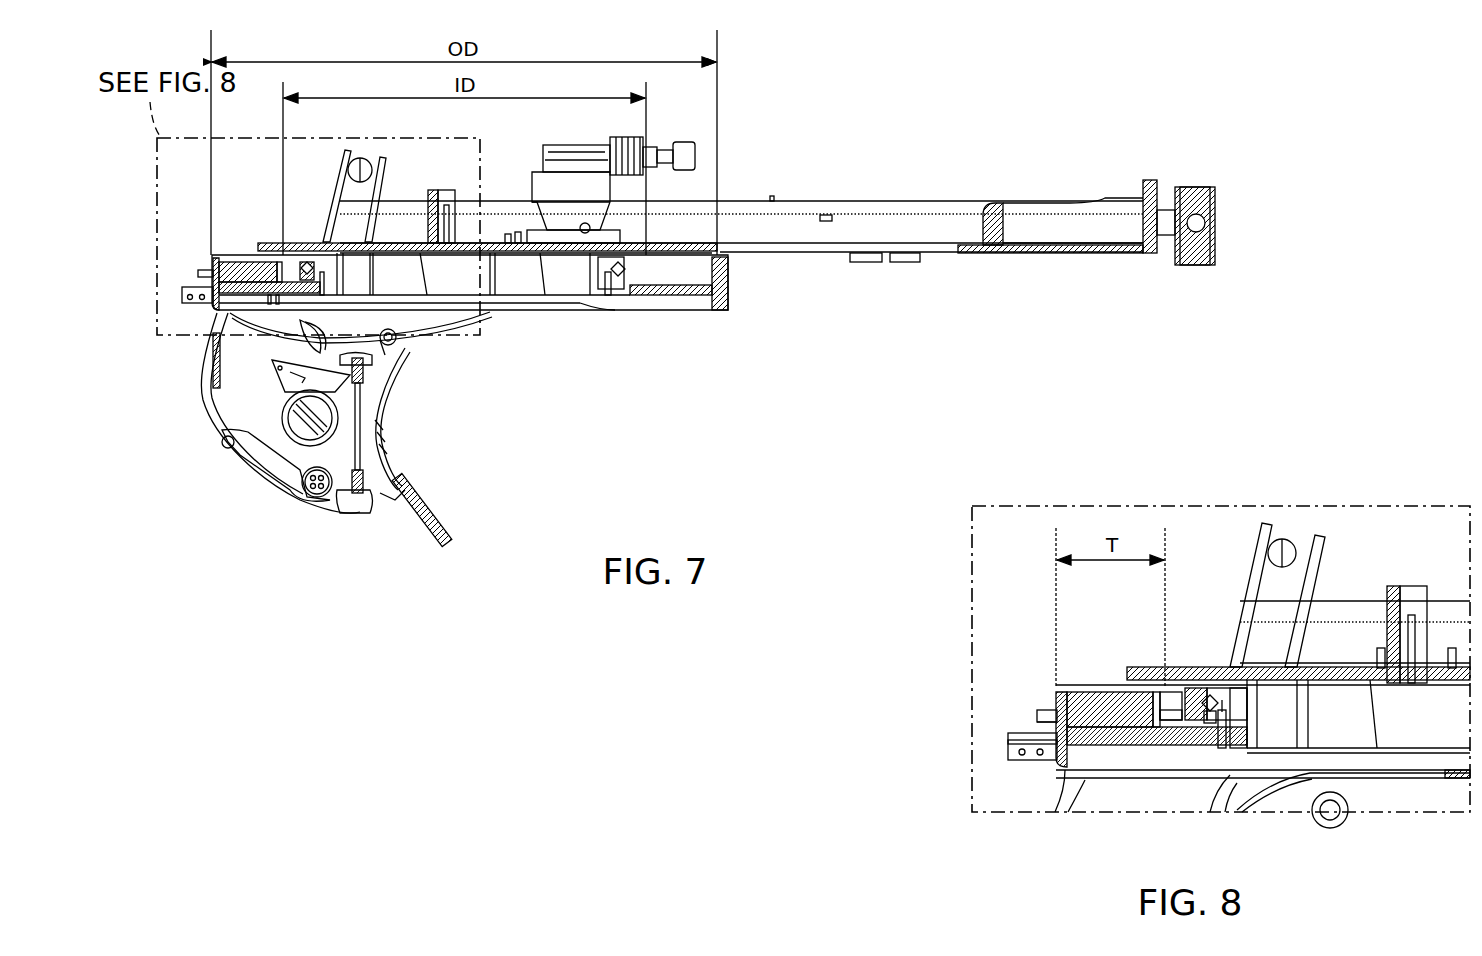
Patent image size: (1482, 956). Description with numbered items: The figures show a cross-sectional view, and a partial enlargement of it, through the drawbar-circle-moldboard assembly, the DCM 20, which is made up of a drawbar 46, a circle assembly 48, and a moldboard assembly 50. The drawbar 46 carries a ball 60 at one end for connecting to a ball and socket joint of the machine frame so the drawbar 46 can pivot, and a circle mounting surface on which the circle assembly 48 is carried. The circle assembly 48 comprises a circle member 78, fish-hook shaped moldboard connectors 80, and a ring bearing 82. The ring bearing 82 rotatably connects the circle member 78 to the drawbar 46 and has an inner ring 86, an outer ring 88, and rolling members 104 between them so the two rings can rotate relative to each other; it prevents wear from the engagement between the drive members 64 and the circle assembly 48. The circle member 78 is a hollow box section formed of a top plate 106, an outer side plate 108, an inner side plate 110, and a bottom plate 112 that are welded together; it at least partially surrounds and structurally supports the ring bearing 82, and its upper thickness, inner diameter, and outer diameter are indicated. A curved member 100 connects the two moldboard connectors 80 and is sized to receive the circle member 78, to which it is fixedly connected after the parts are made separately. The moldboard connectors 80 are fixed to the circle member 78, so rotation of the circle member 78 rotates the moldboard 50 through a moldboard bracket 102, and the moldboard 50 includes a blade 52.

In FIG. 7, the DCM 20 is at (855, 160).
In FIG. 7, the drawbar 46 is at (1003, 258).
In FIG. 7, the circle assembly 48 is at (697, 315).
In FIG. 7, the moldboard assembly 50 is at (382, 418).
In FIG. 7, the blade 52 is at (415, 497).
In FIG. 7, the ball 60 is at (1192, 182).
In FIG. 7, the drive members 64 is at (538, 142).
In FIG. 7, the circle member 78 is at (250, 255).
In FIG. 8, the circle member 78 is at (1050, 762).
In FIG. 7, the moldboard connectors 80 is at (215, 405).
In FIG. 7, the ring bearing 82 is at (625, 290).
In FIG. 8, the ring bearing 82 is at (1224, 752).
In FIG. 8, the inner ring 86 is at (1233, 700).
In FIG. 8, the outer ring 88 is at (1205, 695).
In FIG. 7, the curved member 100 is at (726, 283).
In FIG. 7, the moldboard bracket 102 is at (358, 388).
In FIG. 8, the rolling members 104 is at (1207, 718).
In FIG. 8, the top plate 106 is at (1100, 690).
In FIG. 8, the outer side plate 108 is at (1053, 727).
In FIG. 8, the inner side plate 110 is at (1160, 718).
In FIG. 8, the bottom plate 112 is at (1115, 740).